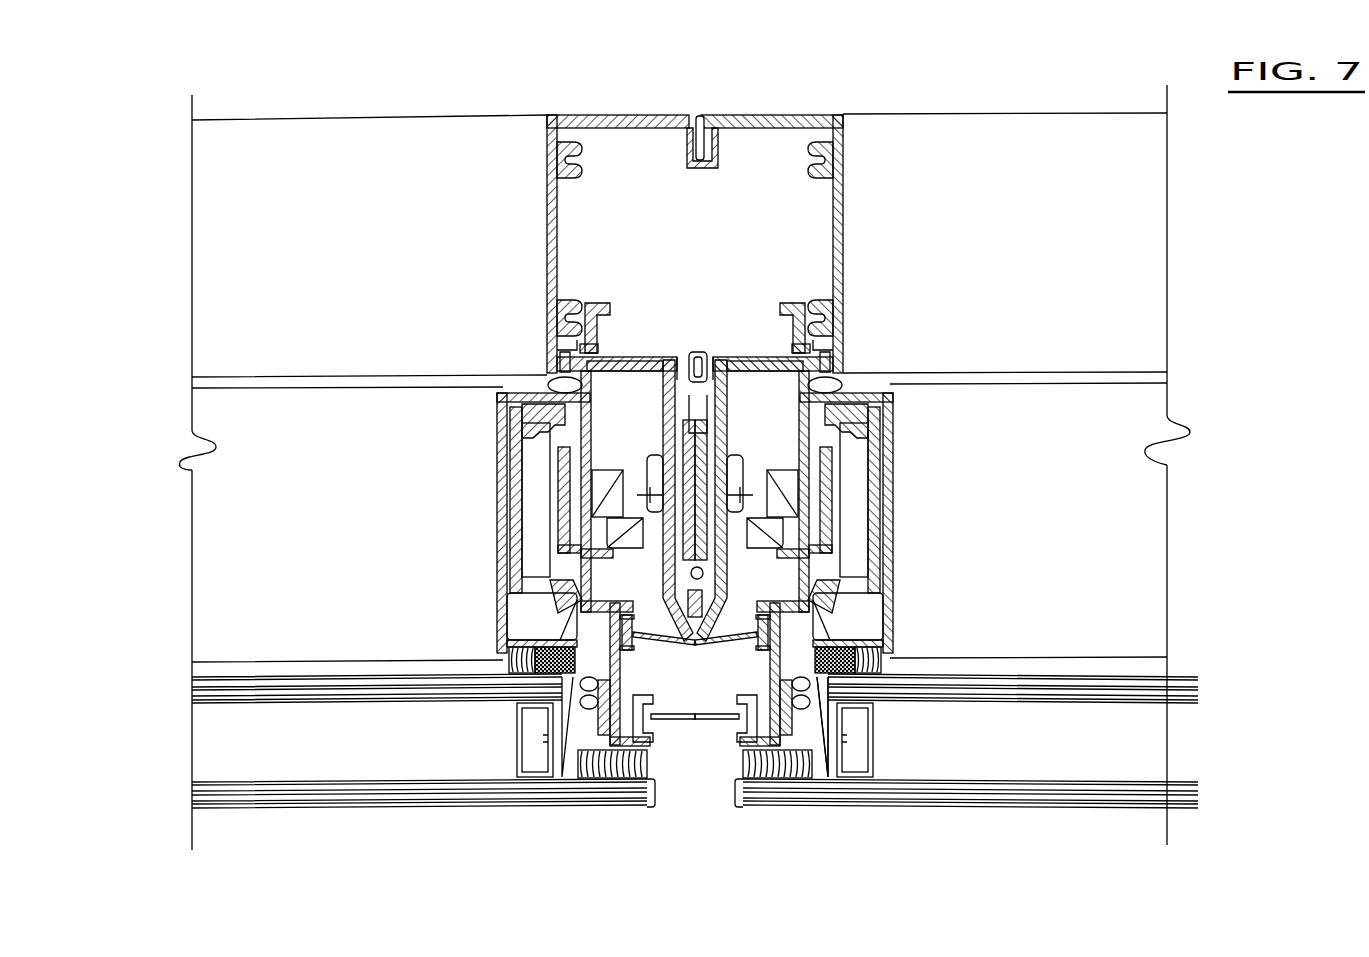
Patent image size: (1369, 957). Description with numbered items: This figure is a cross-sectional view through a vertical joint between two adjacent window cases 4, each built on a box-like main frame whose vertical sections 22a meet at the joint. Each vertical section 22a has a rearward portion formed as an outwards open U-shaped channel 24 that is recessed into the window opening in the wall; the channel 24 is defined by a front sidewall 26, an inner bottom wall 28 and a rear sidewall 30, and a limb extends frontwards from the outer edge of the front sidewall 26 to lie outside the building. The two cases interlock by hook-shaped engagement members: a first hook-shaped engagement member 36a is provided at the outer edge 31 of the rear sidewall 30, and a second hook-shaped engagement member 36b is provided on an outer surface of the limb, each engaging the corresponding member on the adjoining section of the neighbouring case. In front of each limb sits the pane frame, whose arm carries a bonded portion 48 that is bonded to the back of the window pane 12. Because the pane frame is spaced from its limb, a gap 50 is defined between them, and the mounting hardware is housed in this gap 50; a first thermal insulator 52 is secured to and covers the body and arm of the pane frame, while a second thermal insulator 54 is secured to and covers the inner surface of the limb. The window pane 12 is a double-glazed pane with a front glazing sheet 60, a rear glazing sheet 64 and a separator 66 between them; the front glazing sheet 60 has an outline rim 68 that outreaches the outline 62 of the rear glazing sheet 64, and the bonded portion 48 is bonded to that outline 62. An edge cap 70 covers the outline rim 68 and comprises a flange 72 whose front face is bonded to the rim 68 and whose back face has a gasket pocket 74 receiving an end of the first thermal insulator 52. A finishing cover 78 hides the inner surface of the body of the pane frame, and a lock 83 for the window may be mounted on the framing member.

The window case 4 is at (367, 817).
The window pane 12 is at (323, 745).
The vertical section 22a is at (546, 198).
The U-shaped channel 24 is at (590, 279).
The front sidewall 26 is at (641, 355).
The inner bottom wall 28 is at (547, 235).
The rear sidewall 30 is at (597, 114).
The outer edge 31 is at (700, 118).
The first hook-shaped engagement member 36a is at (718, 157).
The second hook-shaped engagement member 36b is at (703, 355).
The bonded portion 48 is at (882, 638).
The gap 50 is at (615, 435).
The first thermal insulator 52 is at (530, 430).
The second thermal insulator 54 is at (600, 373).
The front glazing sheet 60 is at (192, 793).
The outline 62 is at (862, 690).
The rear glazing sheet 64 is at (192, 676).
The separator 66 is at (897, 760).
The outline rim 68 is at (802, 792).
The edge cap 70 is at (650, 787).
The flange 72 is at (605, 760).
The gasket pocket 74 is at (778, 765).
The finishing cover 78 is at (497, 523).
The lock 83 is at (776, 536).